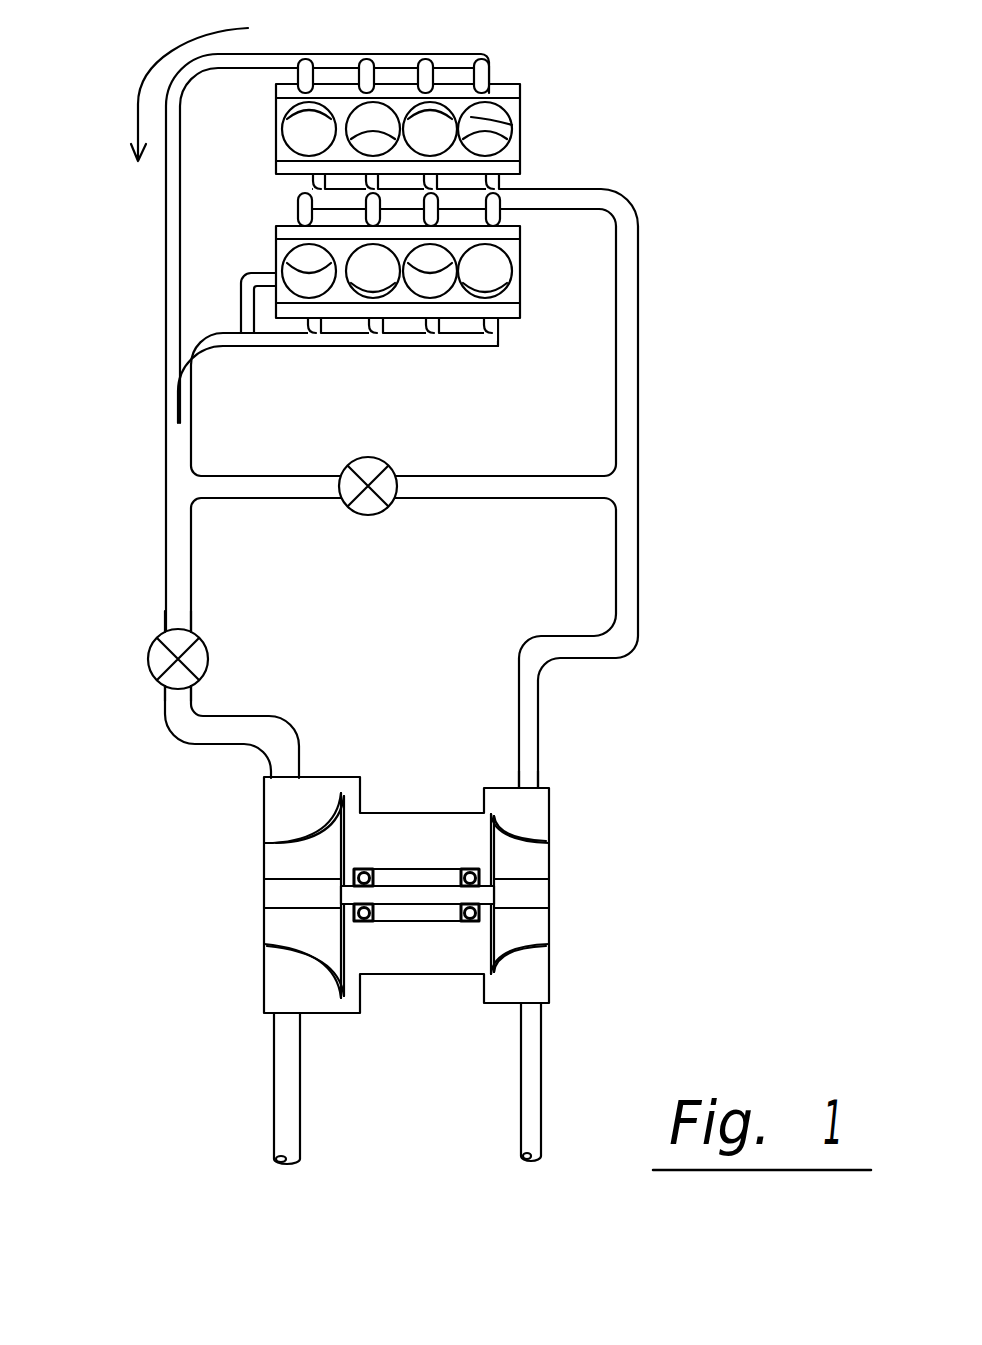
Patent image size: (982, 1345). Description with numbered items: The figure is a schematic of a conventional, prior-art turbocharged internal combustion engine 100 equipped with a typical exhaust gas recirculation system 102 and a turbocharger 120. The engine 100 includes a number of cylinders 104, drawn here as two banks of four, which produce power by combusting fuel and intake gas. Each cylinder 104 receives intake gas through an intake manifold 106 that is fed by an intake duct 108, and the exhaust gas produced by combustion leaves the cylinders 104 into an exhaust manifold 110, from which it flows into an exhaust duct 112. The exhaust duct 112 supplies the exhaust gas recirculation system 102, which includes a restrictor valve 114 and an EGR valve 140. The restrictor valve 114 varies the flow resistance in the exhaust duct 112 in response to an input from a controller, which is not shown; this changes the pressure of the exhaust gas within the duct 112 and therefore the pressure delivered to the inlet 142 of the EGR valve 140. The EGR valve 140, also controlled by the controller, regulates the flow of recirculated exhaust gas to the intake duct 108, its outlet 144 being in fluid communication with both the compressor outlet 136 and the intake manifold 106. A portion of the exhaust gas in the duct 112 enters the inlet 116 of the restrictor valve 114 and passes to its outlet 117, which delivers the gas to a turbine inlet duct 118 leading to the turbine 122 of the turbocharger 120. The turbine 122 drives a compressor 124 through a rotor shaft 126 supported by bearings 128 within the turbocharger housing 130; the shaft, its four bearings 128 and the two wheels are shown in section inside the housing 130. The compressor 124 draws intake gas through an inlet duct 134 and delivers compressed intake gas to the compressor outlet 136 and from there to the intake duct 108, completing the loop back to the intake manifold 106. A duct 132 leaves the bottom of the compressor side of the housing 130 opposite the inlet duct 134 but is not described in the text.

The turbocharged internal combustion engine 100 is at (725, 149).
The exhaust gas recirculation system 102 is at (325, 590).
The cylinders 104 is at (482, 114).
The intake manifold 106 is at (652, 280).
The intake duct 108 is at (537, 700).
The exhaust manifold 110 is at (480, 62).
The exhaust duct 112 is at (176, 221).
The restrictor valve 114 is at (150, 650).
The inlet 116 is at (192, 630).
The valve outlet 117 is at (162, 690).
The turbine inlet duct 118 is at (250, 745).
The turbocharger 120 is at (410, 1016).
The turbine 122 is at (267, 862).
The compressor 124 is at (543, 923).
The rotor shaft 126 is at (397, 887).
The bearings 128 is at (477, 873).
The turbocharger housing 130 is at (430, 977).
The compressor inlet conduit 132 is at (275, 1080).
The inlet duct 134 is at (520, 1110).
The compressor outlet 136 is at (538, 785).
The EGR valve 140 is at (387, 462).
The inlet 142 is at (343, 465).
The outlet 144 is at (388, 502).